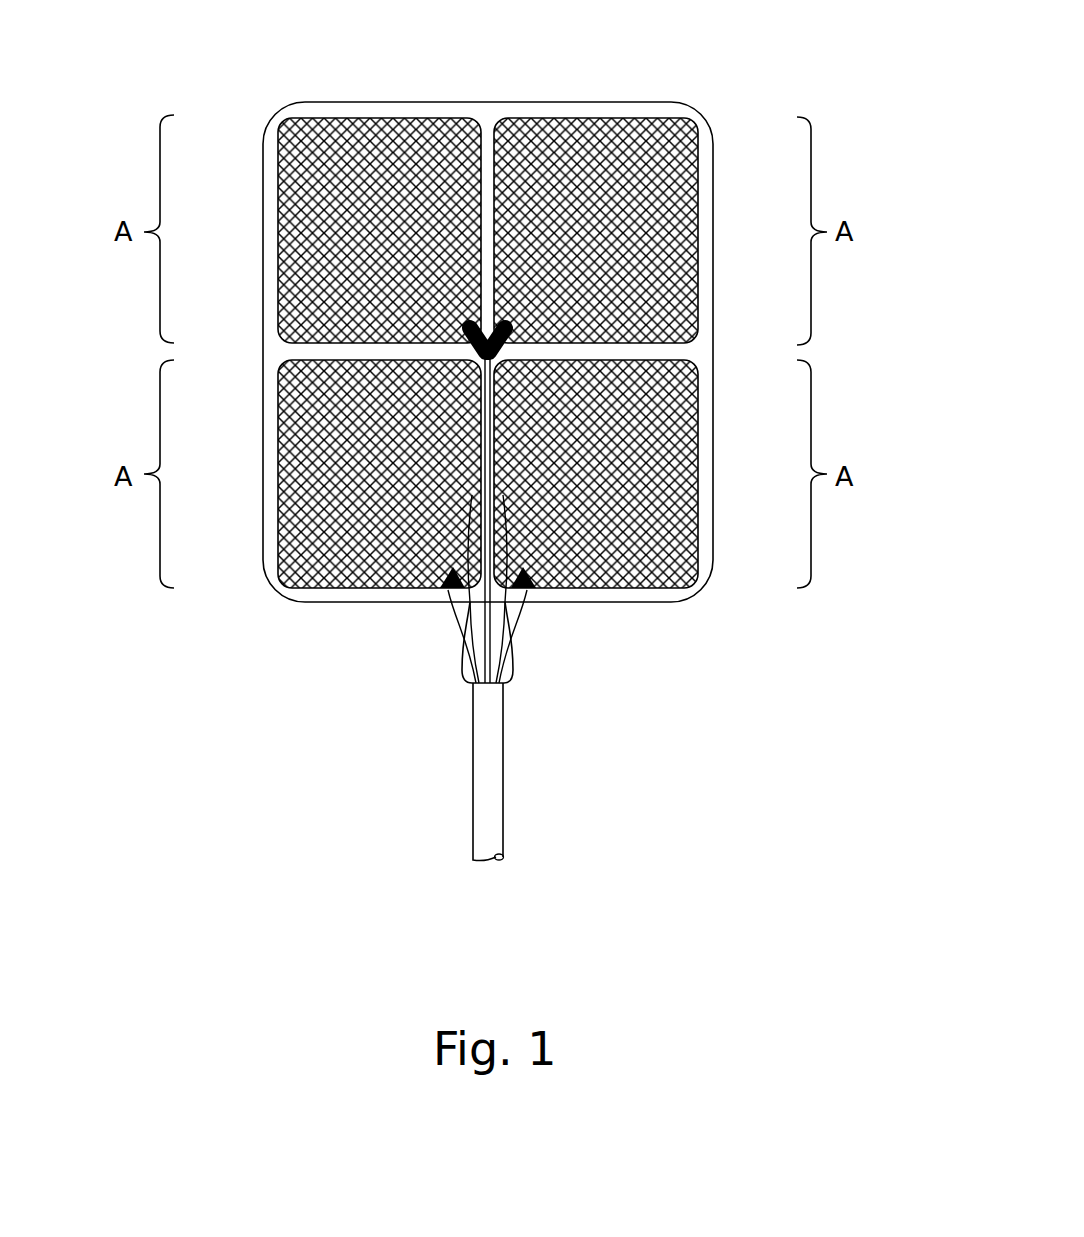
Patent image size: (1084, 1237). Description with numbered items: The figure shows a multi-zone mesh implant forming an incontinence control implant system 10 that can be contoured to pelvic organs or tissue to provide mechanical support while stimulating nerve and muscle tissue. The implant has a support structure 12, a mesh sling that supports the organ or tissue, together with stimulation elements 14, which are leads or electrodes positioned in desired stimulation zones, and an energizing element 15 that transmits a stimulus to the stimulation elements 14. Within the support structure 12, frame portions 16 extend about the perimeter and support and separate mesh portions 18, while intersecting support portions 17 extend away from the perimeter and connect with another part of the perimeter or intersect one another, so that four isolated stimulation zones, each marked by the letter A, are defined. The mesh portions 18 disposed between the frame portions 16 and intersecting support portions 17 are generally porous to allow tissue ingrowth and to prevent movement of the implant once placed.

The incontinence control implant system 10 is at (531, 315).
The support structure 12 is at (487, 308).
The stimulation elements 14 is at (446, 590).
The energizing element 15 is at (497, 862).
The frame portions 16 is at (704, 145).
The intersecting support portions 17 is at (489, 117).
The mesh portions 18 is at (676, 268).